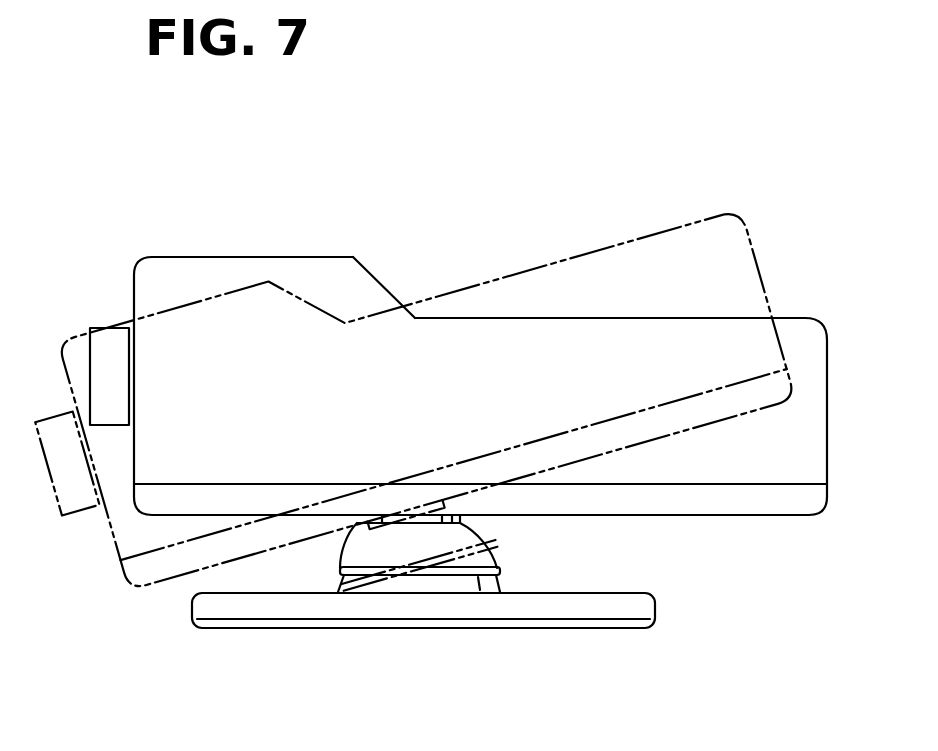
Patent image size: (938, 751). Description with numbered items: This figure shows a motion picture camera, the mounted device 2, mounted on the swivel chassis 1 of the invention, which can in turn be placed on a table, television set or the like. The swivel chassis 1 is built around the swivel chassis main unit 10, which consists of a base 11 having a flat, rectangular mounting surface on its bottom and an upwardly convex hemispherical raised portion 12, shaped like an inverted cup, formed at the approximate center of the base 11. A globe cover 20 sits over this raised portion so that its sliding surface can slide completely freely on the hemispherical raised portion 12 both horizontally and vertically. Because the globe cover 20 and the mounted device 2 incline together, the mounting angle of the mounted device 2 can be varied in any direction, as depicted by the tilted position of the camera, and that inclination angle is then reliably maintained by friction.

The swivel chassis 1 is at (590, 546).
The mounted device 2 is at (334, 316).
The swivel chassis main unit 10 is at (462, 635).
The base 11 is at (582, 602).
The hemispherical raised portion 12 is at (427, 585).
The globe cover 20 is at (488, 543).